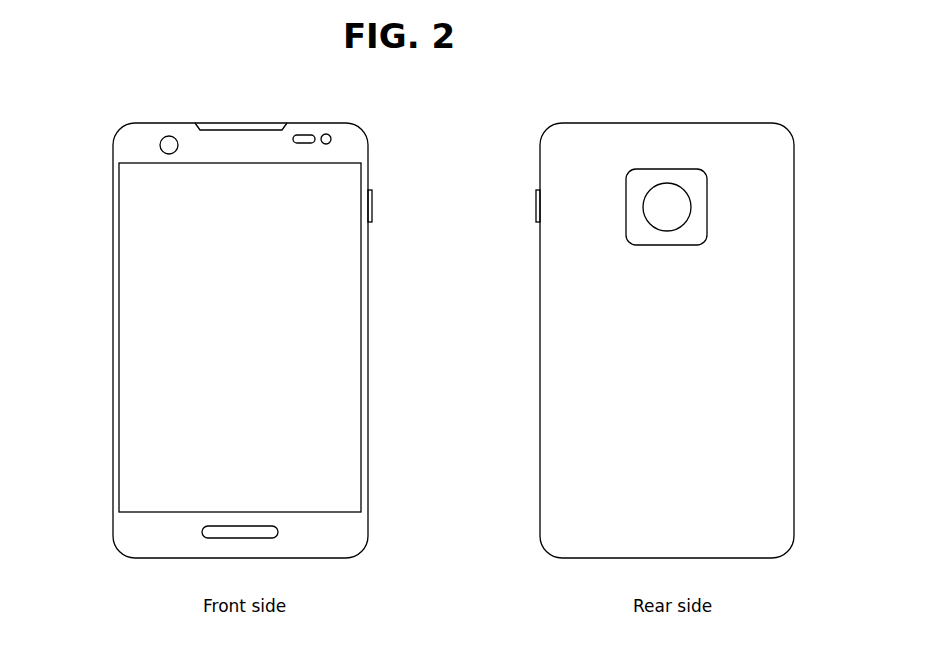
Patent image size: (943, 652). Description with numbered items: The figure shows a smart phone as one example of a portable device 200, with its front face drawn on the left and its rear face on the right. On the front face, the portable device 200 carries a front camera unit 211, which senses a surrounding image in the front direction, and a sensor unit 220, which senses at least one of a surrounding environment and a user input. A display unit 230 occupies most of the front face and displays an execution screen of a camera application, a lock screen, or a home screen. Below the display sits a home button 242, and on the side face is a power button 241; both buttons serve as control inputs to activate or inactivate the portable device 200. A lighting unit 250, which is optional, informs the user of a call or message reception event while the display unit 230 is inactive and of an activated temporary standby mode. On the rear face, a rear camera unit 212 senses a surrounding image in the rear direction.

The portable device 200 is at (125, 524).
The front camera unit 211 is at (331, 139).
The rear camera unit 212 is at (665, 188).
The sensor unit 220 is at (170, 136).
The display unit 230 is at (362, 337).
The power button 241 is at (536, 206).
The home button 242 is at (278, 532).
The lighting unit 250 is at (304, 135).